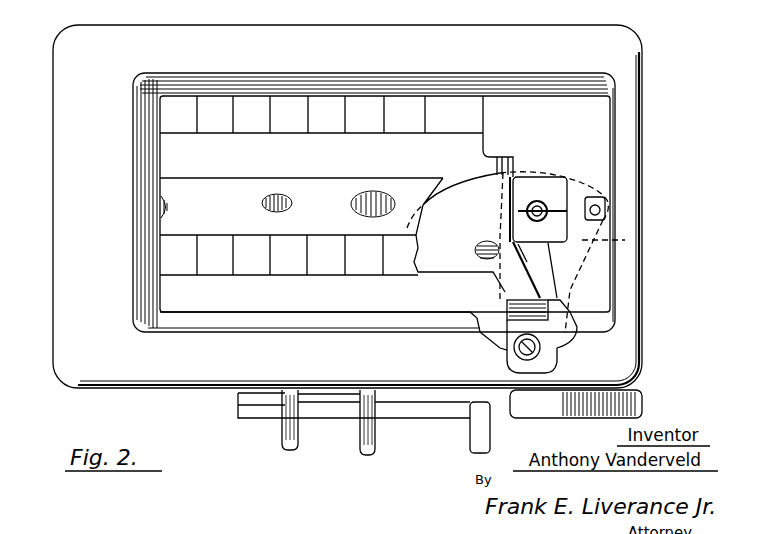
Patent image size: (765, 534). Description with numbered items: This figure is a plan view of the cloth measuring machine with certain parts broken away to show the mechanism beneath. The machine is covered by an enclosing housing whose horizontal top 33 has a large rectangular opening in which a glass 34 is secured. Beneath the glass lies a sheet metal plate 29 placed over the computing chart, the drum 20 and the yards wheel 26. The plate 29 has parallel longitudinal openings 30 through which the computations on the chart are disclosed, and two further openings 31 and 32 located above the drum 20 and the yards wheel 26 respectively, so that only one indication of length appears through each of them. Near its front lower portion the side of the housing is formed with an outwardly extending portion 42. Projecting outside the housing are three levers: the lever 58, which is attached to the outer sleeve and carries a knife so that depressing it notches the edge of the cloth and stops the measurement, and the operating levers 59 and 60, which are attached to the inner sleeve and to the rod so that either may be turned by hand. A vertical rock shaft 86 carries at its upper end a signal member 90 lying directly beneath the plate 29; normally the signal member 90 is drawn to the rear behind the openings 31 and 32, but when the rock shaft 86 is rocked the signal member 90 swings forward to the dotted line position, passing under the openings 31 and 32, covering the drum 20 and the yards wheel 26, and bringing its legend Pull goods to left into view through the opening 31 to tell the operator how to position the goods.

The drum 20 is at (555, 230).
The yards wheel 26 is at (607, 195).
The sheet metal plate 29 is at (588, 138).
The parallel longitudinal openings 30 is at (251, 162).
The opening 31 is at (555, 190).
The opening 32 is at (606, 213).
The horizontal top 33 is at (108, 233).
The glass 34 is at (578, 97).
The outwardly extending portion 42 is at (642, 402).
The lever 58 is at (293, 428).
The operating lever 59 is at (348, 398).
The operating lever 60 is at (322, 407).
The vertical rock shaft 86 is at (518, 346).
The signal member 90 is at (472, 264).